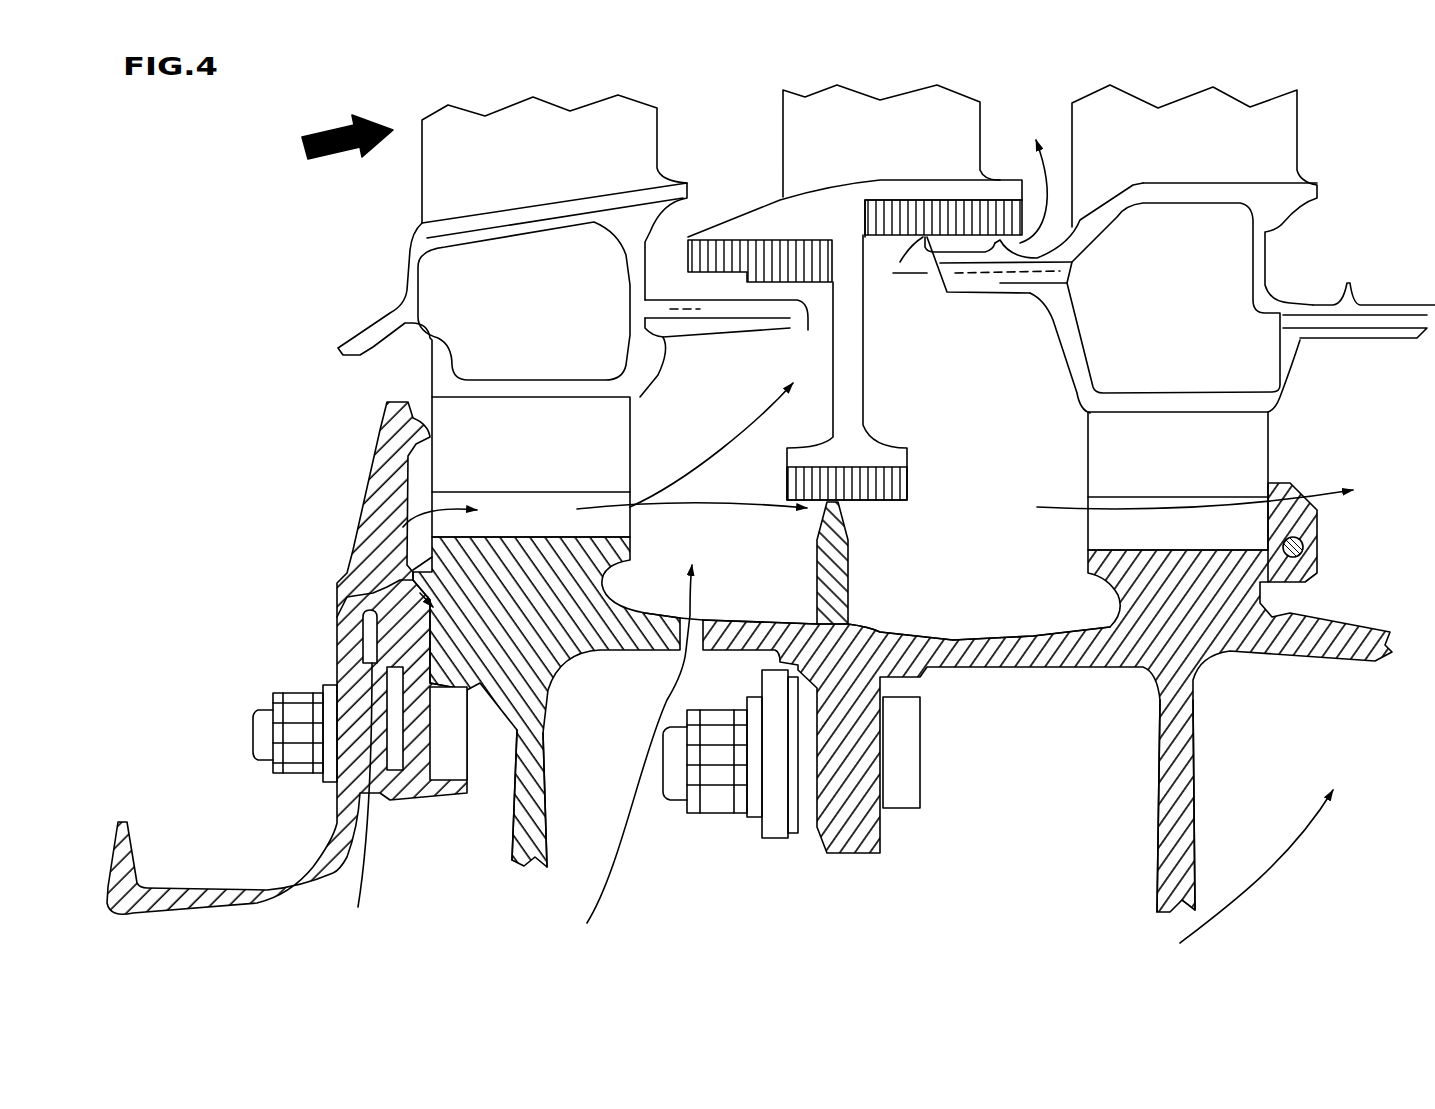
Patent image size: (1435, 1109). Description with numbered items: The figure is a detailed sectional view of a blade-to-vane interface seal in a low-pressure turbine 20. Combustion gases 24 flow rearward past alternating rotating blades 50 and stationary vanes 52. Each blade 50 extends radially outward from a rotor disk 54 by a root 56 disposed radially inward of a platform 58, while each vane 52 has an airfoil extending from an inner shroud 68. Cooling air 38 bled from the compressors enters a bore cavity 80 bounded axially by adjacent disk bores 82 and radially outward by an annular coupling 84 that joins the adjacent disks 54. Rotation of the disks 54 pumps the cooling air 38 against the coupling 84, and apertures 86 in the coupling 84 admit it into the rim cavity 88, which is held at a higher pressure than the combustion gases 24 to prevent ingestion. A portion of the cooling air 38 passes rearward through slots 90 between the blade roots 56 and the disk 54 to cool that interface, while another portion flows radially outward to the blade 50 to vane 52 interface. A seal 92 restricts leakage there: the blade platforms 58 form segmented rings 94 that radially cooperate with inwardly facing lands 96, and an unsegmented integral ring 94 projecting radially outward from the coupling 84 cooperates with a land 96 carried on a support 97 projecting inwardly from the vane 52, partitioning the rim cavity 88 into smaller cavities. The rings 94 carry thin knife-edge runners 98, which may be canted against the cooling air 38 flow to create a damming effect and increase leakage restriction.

The low-pressure turbine 20 is at (245, 198).
The combustion gases 24 is at (347, 150).
The cooling air 38 is at (433, 510).
The blade 50 is at (565, 161).
The vane 52 is at (903, 137).
The rotor disk 54 is at (560, 620).
The root 56 is at (543, 462).
The platform 58 is at (551, 314).
The inner shroud 68 is at (903, 177).
The bore cavity 80 is at (796, 877).
The disk bore 82 is at (547, 858).
The annular coupling 84 is at (730, 617).
The aperture 86 is at (673, 658).
The rim cavity 88 is at (746, 541).
The slot 90 is at (546, 530).
The seal 92 is at (940, 353).
The ring 94 is at (718, 327).
The land 96 is at (863, 215).
The support 97 is at (853, 370).
The runner 98 is at (710, 282).